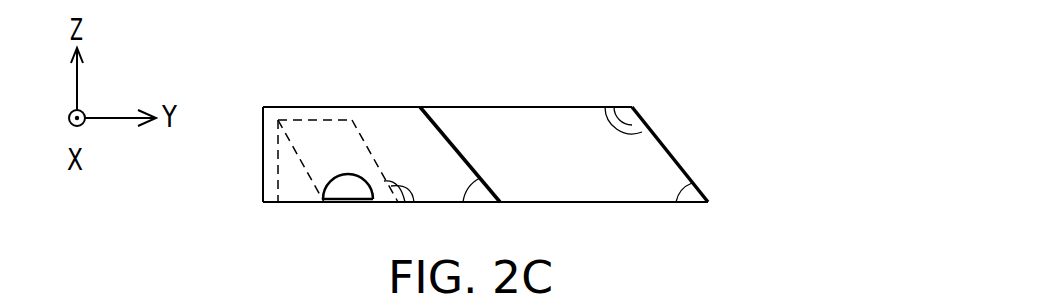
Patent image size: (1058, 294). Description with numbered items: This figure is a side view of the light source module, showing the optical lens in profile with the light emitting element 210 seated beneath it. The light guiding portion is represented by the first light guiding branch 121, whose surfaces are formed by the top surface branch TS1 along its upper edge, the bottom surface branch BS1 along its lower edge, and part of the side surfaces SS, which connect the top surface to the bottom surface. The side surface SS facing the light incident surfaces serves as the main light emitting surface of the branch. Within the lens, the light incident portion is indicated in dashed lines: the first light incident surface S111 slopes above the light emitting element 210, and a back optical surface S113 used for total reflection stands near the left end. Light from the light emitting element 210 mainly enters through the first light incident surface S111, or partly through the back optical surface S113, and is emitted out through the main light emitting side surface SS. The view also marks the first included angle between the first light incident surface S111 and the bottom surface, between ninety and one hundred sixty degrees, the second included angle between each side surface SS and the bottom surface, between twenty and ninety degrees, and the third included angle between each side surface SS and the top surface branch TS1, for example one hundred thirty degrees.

The first light guiding branch 121 is at (551, 146).
The top surface branch TS1 is at (541, 100).
The bottom surface branch BS1 is at (546, 210).
The side surface SS is at (472, 159).
The first light incident surface S111 is at (380, 157).
The back optical surface S113 is at (270, 158).
The light emitting element 210 is at (348, 193).